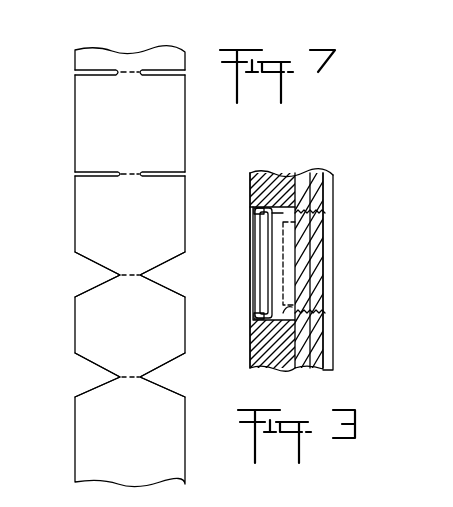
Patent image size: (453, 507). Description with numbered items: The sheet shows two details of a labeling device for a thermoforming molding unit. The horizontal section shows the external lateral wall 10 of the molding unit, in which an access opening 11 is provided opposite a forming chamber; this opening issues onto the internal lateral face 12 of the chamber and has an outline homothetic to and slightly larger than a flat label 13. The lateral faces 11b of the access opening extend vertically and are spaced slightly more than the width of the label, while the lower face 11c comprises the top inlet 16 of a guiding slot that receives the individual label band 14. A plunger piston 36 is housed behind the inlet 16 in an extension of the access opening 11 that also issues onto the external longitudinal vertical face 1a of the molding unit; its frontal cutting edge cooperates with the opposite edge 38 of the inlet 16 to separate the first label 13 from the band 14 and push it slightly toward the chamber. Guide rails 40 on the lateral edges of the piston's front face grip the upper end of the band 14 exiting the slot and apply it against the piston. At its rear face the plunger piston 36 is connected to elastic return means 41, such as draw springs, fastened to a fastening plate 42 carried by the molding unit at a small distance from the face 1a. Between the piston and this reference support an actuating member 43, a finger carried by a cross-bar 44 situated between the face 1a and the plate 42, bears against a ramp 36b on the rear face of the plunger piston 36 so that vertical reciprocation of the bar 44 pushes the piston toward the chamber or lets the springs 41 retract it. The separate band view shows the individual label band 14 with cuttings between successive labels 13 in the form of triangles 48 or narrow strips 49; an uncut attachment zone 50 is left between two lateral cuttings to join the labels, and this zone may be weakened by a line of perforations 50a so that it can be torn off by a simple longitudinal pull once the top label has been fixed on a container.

In FIG. 3, the longitudinal vertical face 1a is at (305, 178).
In FIG. 3, the external lateral wall 10 is at (272, 178).
In FIG. 3, the access opening 11 is at (238, 262).
In FIG. 3, the lateral faces 11b is at (292, 307).
In FIG. 3, the lower face 11c is at (256, 298).
In FIG. 3, the lateral face 12 is at (252, 360).
In FIG. 7, the label 13 is at (150, 125).
In FIG. 3, the label 13 is at (283, 238).
In FIG. 7, the individual label band 14 is at (75, 135).
In FIG. 3, the top inlet 16 is at (258, 278).
In FIG. 3, the plunger piston 36 is at (331, 175).
In FIG. 3, the ramp 36b is at (283, 288).
In FIG. 3, the opposite edge 38 is at (255, 226).
In FIG. 3, the guide rails 40 is at (256, 175).
In FIG. 3, the elastic return means 41 is at (318, 212).
In FIG. 3, the fastening plate 42 is at (328, 195).
In FIG. 3, the actuating member 43 is at (287, 263).
In FIG. 3, the cross-bar 44 is at (305, 335).
In FIG. 7, the triangles 48 is at (95, 276).
In FIG. 7, the narrow strips 49 is at (98, 70).
In FIG. 7, the attachment zone 50 is at (134, 172).
In FIG. 7, the line of perforations 50a is at (138, 70).